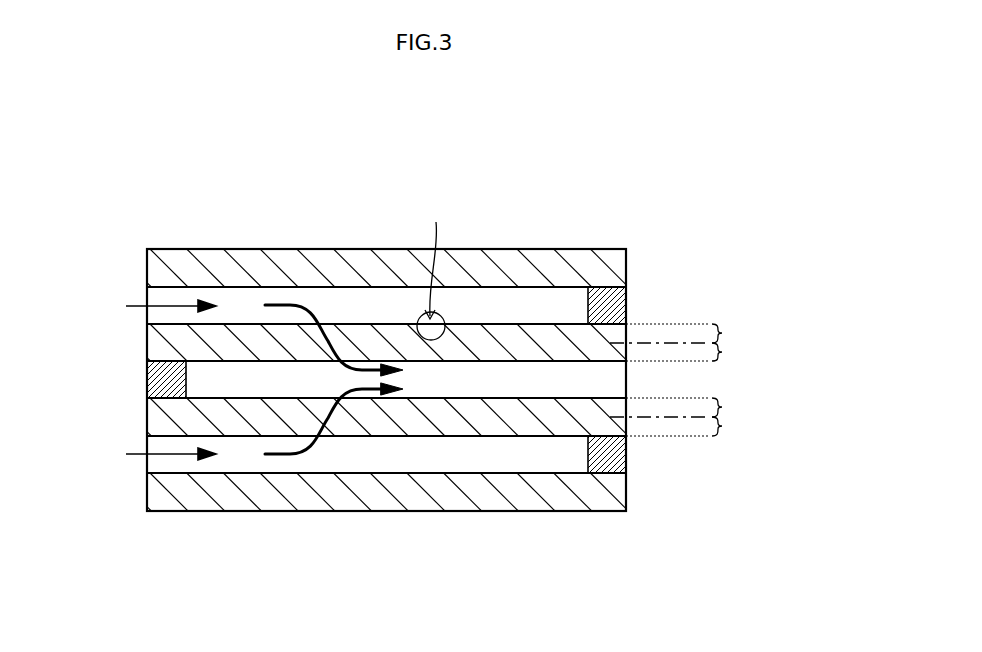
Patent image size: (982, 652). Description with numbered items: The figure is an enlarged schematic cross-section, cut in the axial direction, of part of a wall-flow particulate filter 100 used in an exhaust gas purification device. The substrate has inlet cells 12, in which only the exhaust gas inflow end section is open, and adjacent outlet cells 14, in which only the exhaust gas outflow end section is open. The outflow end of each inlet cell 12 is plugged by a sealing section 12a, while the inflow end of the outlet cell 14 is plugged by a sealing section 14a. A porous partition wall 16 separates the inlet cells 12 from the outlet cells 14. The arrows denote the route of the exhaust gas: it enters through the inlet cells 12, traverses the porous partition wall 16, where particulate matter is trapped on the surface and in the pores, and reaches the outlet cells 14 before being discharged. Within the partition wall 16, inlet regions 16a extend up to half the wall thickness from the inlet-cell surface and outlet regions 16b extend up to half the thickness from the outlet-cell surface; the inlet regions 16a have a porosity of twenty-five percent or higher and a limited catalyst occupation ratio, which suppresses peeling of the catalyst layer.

The particulate filter 100 is at (580, 214).
The inlet cells 12 is at (478, 300).
The sealing section 12a is at (612, 301).
The outlet cells 14 is at (608, 380).
The sealing section 14a is at (148, 374).
The partition wall 16 is at (357, 322).
The inlet regions 16a is at (722, 333).
The outlet regions 16b is at (722, 352).